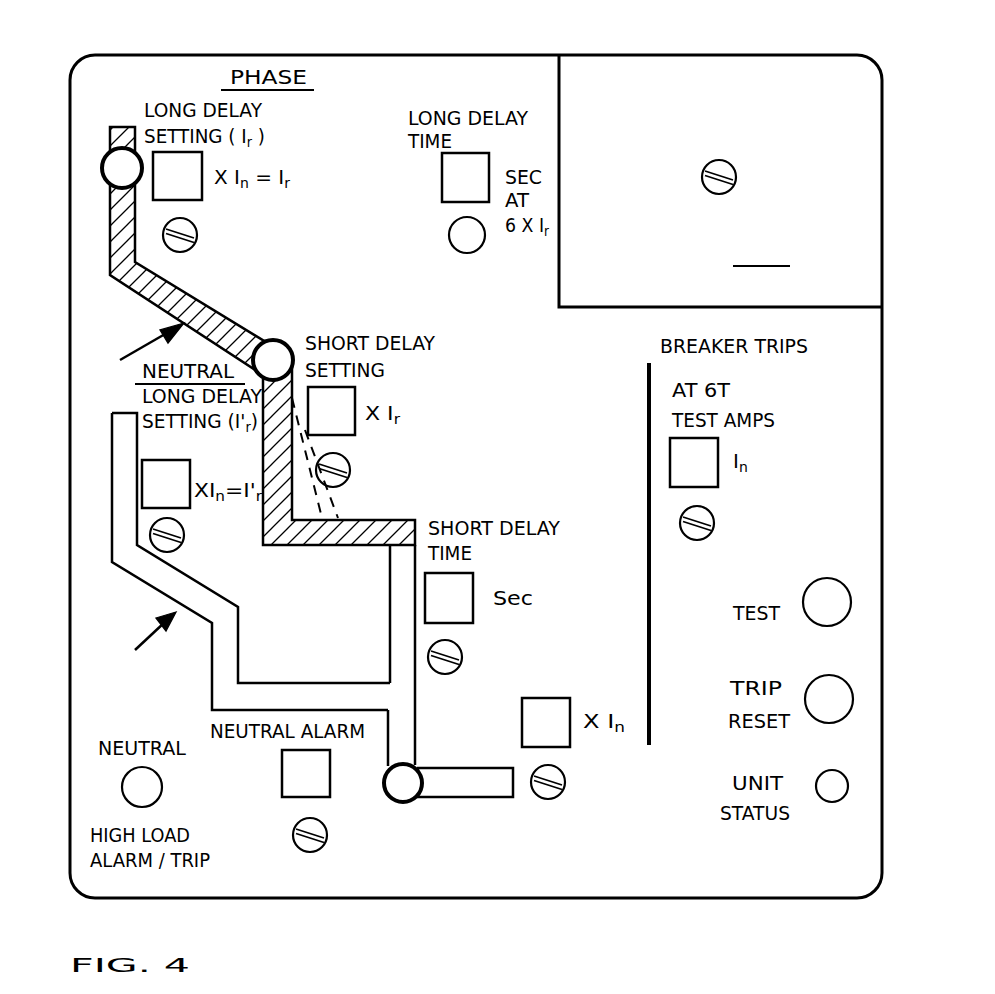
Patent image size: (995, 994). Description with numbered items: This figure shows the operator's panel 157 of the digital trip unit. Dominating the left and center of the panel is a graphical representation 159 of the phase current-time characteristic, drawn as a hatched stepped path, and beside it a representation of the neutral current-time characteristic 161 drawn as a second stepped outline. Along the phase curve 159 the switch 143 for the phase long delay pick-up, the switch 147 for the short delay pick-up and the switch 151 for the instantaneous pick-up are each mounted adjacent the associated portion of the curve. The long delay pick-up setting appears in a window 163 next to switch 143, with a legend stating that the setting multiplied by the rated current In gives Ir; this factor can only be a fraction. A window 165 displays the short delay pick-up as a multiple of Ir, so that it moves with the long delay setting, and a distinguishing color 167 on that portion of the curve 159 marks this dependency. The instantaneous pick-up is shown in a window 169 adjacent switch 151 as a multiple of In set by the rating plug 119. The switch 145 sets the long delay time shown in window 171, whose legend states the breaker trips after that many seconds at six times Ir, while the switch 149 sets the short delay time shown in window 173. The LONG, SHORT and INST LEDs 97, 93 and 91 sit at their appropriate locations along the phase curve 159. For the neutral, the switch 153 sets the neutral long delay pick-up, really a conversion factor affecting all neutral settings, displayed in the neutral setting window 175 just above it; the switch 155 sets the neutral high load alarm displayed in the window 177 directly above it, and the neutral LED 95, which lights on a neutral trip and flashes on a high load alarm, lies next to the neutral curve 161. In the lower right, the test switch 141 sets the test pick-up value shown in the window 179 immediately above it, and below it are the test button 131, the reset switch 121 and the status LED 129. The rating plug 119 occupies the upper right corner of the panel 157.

The operator's panel 157 is at (387, 31).
The rating plug 119 is at (728, 75).
The LONG LED 97 is at (122, 157).
The SHORT LED 93 is at (275, 355).
The INST LED 91 is at (412, 800).
The long delay pick-up window 163 is at (187, 195).
The phase long delay switch 143 is at (190, 247).
The long delay time window 171 is at (448, 183).
The long delay time switch 145 is at (456, 244).
The distinguishing color 167 is at (143, 307).
The graphical representation of phase current-time characteristic 159 is at (130, 350).
The short delay pick-up window 165 is at (350, 395).
The phase short delay switch 147 is at (345, 469).
The neutral setting window 175 is at (148, 470).
The neutral long delay switch 153 is at (178, 532).
The representation of neutral current-time characteristic 161 is at (241, 561).
The short delay time window 173 is at (470, 588).
The short delay time switch 149 is at (463, 655).
The instantaneous pick-up window 169 is at (522, 718).
The phase instantaneous switch 151 is at (558, 796).
The neutral high load alarm window 177 is at (325, 780).
The neutral high load alarm switch 155 is at (318, 850).
The neutral LED 95 is at (152, 790).
The test pick-up window 179 is at (712, 476).
The test switch 141 is at (697, 538).
The test button 131 is at (832, 590).
The reset switch 121 is at (818, 710).
The status LED 129 is at (832, 793).